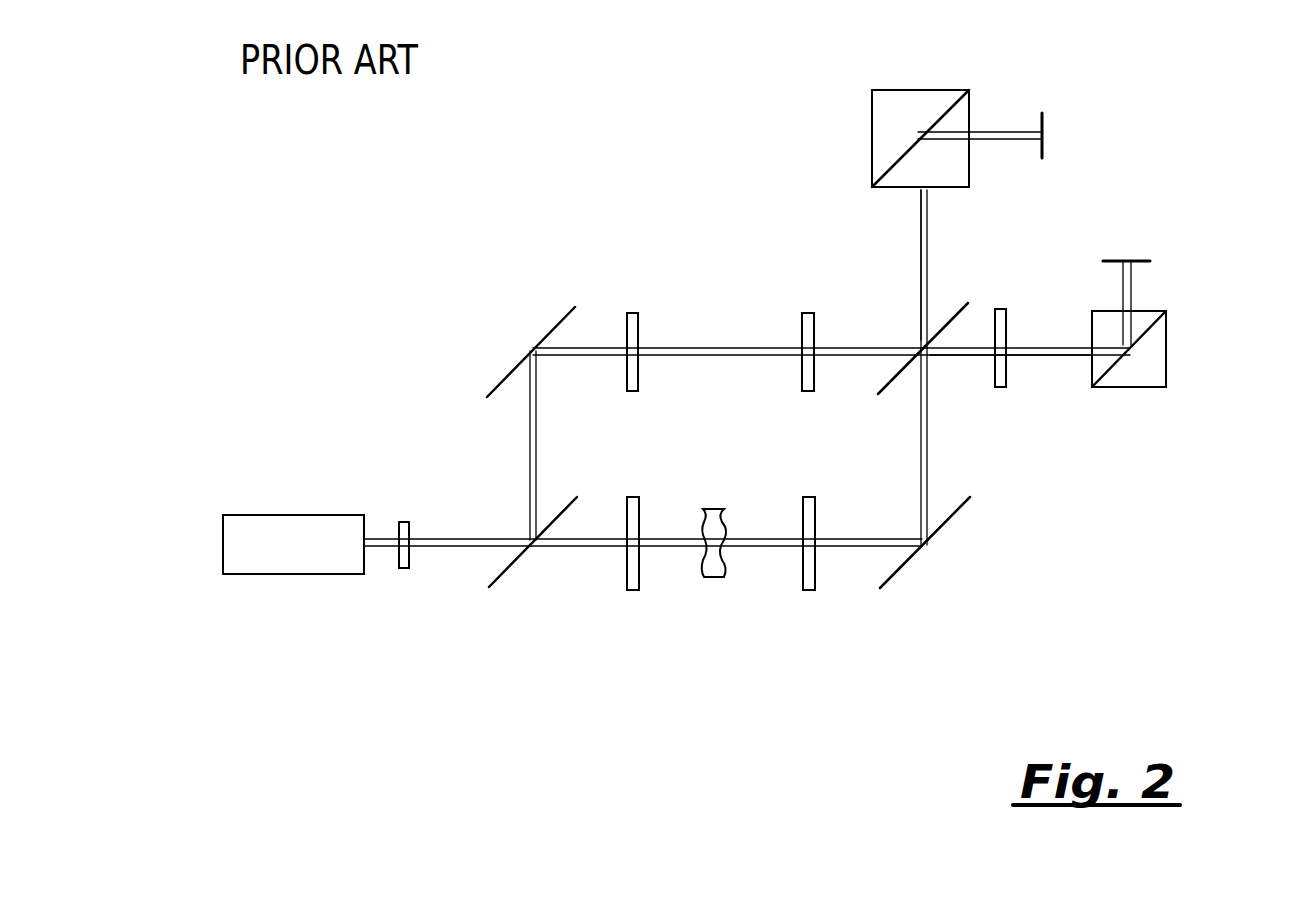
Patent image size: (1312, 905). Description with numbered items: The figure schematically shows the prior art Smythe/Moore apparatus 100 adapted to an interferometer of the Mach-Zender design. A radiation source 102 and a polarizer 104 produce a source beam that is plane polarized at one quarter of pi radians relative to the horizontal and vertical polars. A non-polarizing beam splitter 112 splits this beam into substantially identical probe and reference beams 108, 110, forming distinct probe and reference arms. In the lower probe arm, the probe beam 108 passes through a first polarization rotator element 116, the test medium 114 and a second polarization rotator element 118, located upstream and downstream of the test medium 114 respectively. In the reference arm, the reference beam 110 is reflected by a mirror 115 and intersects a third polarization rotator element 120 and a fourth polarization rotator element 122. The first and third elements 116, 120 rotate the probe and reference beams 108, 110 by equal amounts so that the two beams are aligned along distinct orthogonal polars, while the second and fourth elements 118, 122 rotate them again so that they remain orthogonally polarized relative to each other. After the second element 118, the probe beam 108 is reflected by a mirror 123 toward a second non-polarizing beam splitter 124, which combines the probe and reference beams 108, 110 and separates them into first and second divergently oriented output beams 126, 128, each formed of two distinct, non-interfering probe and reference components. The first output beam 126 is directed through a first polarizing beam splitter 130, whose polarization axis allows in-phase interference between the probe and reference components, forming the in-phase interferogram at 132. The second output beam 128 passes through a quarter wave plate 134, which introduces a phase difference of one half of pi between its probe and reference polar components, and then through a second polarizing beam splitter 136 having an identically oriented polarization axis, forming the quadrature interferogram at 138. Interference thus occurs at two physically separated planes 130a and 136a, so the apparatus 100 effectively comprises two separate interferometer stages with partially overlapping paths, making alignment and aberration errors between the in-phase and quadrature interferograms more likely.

The Smythe/Moore apparatus 100 is at (528, 256).
The radiation source 102 is at (247, 527).
The polarizer 104 is at (404, 570).
The probe beam 108 is at (578, 548).
The reference beam 110 is at (528, 447).
The non-polarizing beam splitter 112 is at (502, 578).
The test medium 114 is at (714, 577).
The mirror 115 is at (502, 380).
The first polarization rotator element 116 is at (632, 590).
The second polarization rotator element 118 is at (809, 590).
The third polarization rotator element 120 is at (638, 318).
The fourth polarization rotator element 122 is at (805, 313).
The mirror 123 is at (910, 560).
The second non-polarizing beam splitter 124 is at (955, 310).
The first output beam 126 is at (918, 224).
The second output beam 128 is at (960, 352).
The first polarizing beam splitter 130 is at (970, 110).
The interference plane 130a is at (934, 118).
The in-phase interferogram 132 is at (1043, 120).
The quarter wave plate 134 is at (1006, 318).
The second polarizing beam splitter 136 is at (1145, 388).
The interference plane 136a is at (1135, 347).
The quadrature interferogram 138 is at (1140, 258).